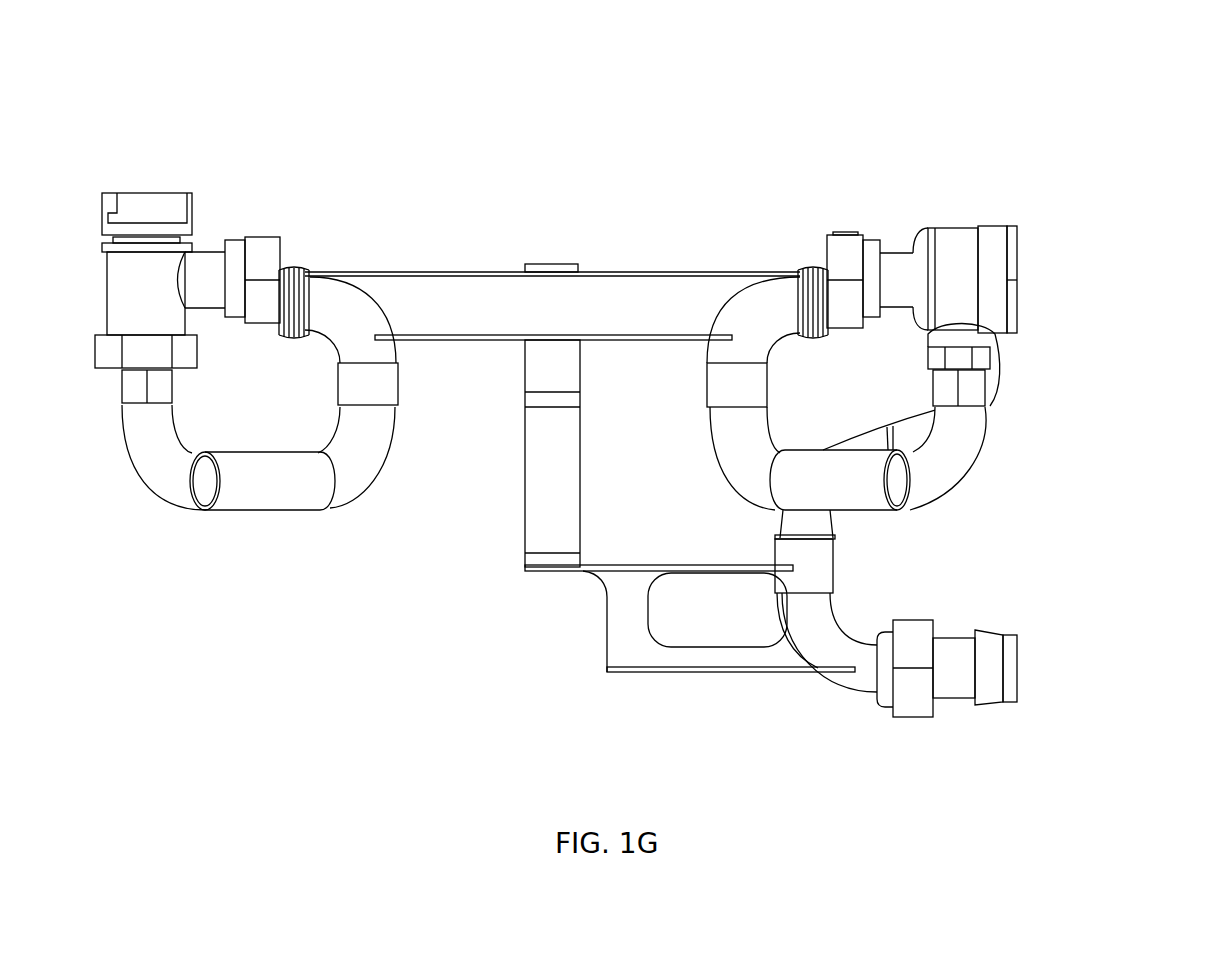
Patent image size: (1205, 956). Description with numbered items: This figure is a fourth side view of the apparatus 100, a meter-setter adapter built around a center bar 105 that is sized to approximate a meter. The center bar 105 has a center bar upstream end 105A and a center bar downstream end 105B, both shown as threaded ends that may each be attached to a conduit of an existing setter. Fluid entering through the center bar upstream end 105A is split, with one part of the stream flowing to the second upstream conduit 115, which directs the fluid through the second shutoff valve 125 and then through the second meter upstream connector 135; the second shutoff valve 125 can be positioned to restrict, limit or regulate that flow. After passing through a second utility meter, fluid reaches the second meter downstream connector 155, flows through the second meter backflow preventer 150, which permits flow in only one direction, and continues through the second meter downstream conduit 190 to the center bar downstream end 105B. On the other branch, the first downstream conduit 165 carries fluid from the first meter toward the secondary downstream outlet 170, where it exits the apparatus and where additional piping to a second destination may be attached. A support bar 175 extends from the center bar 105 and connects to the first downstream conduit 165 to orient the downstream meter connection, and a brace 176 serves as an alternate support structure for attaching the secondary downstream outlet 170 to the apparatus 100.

The apparatus 100 is at (399, 116).
The center bar 105 is at (447, 272).
The center bar upstream end 105A is at (302, 268).
The center bar downstream end 105B is at (806, 266).
The second upstream conduit 115 is at (261, 508).
The second shutoff valve 125 is at (136, 193).
The second meter upstream connector 135 is at (262, 237).
The second meter backflow preventer 150 is at (1017, 255).
The second meter downstream connector 155 is at (880, 246).
The first downstream conduit 165 is at (848, 630).
The secondary downstream outlet 170 is at (1017, 658).
The support bar 175 is at (540, 572).
The brace 176 is at (708, 672).
The second meter downstream conduit 190 is at (967, 472).